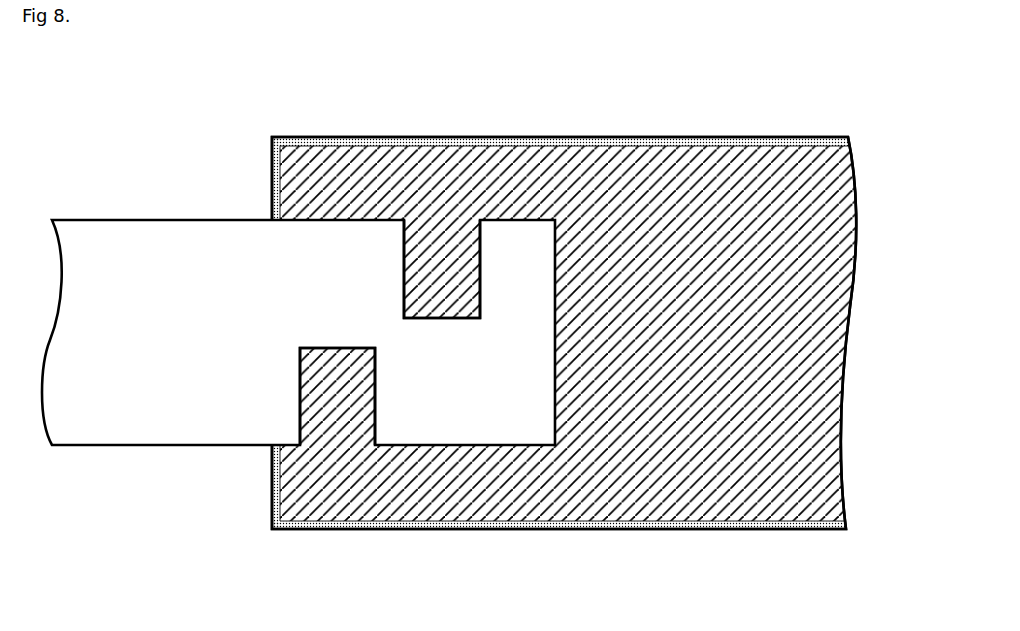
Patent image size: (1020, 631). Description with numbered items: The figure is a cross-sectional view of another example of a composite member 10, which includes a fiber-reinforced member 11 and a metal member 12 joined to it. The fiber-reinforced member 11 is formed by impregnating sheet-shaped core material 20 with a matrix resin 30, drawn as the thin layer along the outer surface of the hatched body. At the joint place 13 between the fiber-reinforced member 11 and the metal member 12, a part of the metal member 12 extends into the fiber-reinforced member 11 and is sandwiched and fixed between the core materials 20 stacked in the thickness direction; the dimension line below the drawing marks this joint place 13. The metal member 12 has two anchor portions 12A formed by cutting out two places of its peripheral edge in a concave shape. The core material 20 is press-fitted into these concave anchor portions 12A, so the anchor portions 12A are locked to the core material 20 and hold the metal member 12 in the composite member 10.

The composite member 10 is at (272, 137).
The fiber-reinforced member 11 is at (669, 137).
The metal member 12 is at (117, 220).
The anchor portion 12A is at (478, 248).
The joint place 13 is at (602, 533).
The core material 20 is at (833, 277).
The matrix resin 30 is at (772, 143).